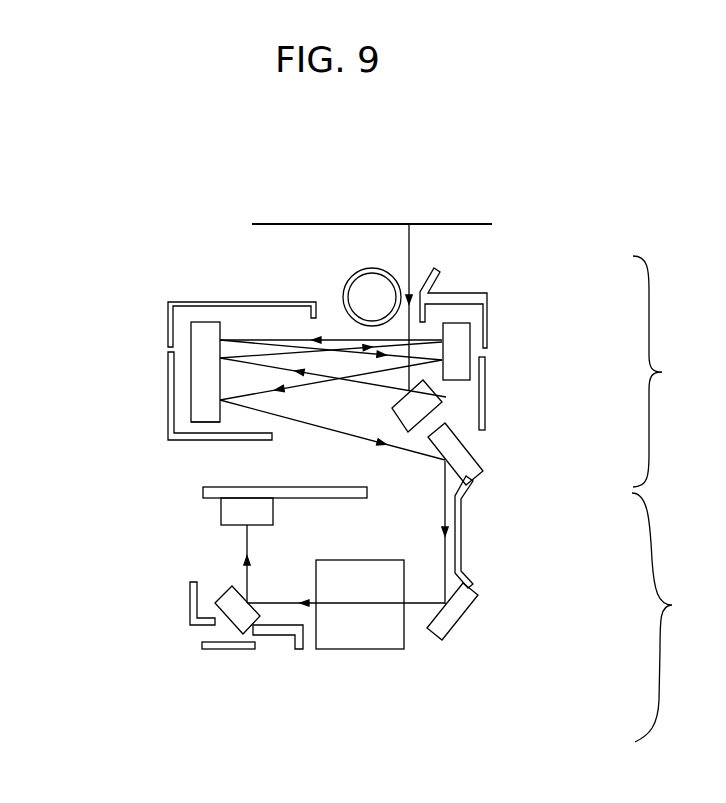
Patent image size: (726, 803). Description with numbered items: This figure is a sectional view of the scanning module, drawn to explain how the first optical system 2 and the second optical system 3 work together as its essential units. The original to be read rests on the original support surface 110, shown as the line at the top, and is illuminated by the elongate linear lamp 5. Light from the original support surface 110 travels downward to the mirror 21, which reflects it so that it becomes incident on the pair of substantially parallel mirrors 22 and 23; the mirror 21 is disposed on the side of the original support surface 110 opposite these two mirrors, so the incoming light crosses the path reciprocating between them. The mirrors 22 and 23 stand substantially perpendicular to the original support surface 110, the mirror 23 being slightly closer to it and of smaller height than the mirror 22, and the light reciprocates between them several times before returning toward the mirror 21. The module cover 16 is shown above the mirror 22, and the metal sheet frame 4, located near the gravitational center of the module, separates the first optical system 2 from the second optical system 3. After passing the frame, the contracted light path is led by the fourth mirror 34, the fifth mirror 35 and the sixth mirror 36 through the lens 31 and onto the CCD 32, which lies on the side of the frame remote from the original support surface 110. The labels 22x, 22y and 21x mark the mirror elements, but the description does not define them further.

The original support surface 110 is at (432, 225).
The elongate linear lamp 5 is at (345, 278).
The module cover 16 is at (168, 312).
The metal sheet frame 4 is at (200, 442).
The mirror 22 is at (197, 398).
The mirror surface 22x is at (207, 422).
The mirror holding plate 22y is at (485, 390).
The mirror 23 is at (470, 337).
The first mirror element 21x is at (443, 398).
The mirror 21 is at (447, 426).
The fourth mirror 34 is at (480, 490).
The fifth mirror 35 is at (461, 613).
The lens 31 is at (367, 650).
The CCD 32 is at (222, 511).
The sixth mirror 36 is at (233, 620).
The first optical system 2 is at (664, 371).
The second optical system 3 is at (662, 617).